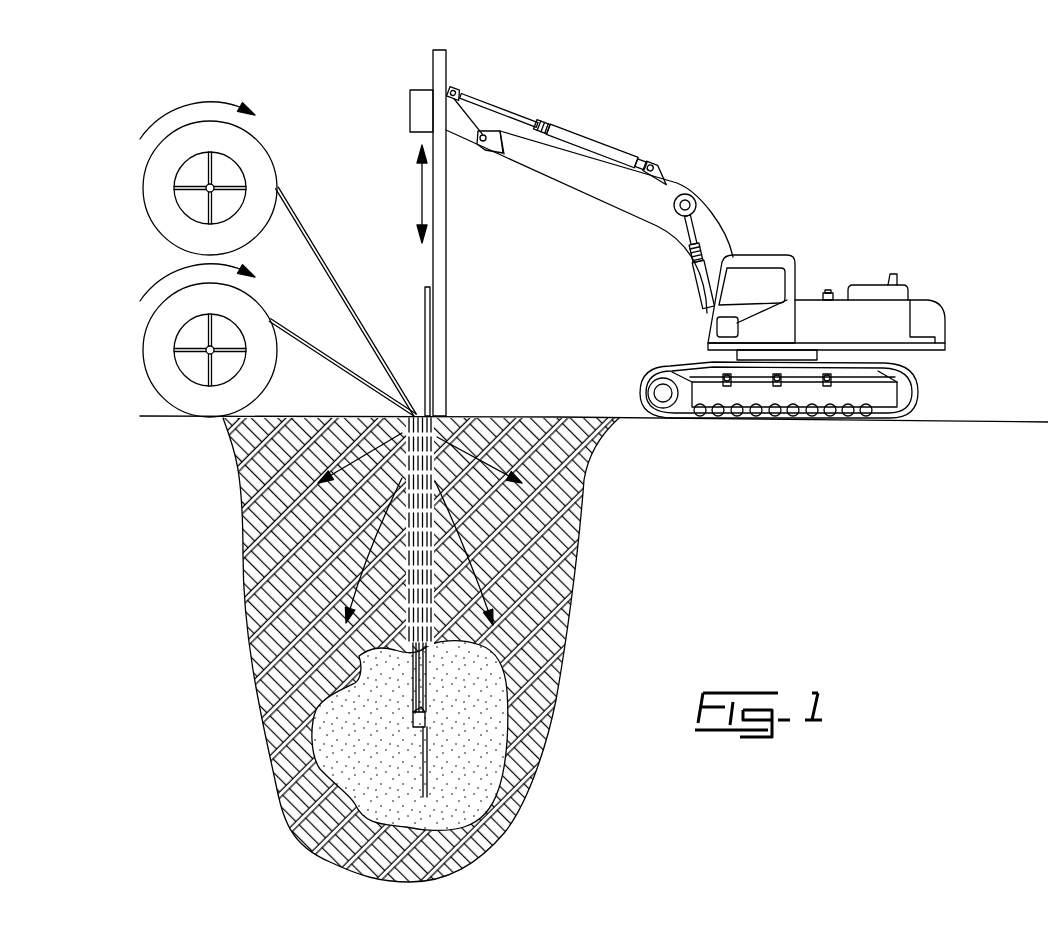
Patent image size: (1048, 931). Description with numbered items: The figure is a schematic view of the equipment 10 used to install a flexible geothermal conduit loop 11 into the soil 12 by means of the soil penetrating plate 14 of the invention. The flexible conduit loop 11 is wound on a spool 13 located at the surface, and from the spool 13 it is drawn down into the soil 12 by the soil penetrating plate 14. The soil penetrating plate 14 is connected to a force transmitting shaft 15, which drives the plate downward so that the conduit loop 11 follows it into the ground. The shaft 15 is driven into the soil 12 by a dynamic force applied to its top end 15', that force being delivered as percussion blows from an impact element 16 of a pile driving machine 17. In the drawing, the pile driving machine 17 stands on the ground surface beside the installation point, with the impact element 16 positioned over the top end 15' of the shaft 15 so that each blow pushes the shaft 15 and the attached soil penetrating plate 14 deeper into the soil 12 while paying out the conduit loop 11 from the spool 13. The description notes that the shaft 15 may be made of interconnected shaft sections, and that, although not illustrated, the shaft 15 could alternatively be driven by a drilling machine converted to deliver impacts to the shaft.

The equipment for installation of a flexible geothermal conduit loop 10 is at (732, 252).
The flexible geothermal conduit loop 11 is at (412, 706).
The soil 12 is at (463, 690).
The spool 13 is at (187, 358).
The soil penetrating plate 14 is at (413, 805).
The force transmitting shaft 15 is at (525, 565).
The top end of the shaft 15' is at (471, 527).
The impact element 16 is at (418, 105).
The pile driving machine 17 is at (748, 284).